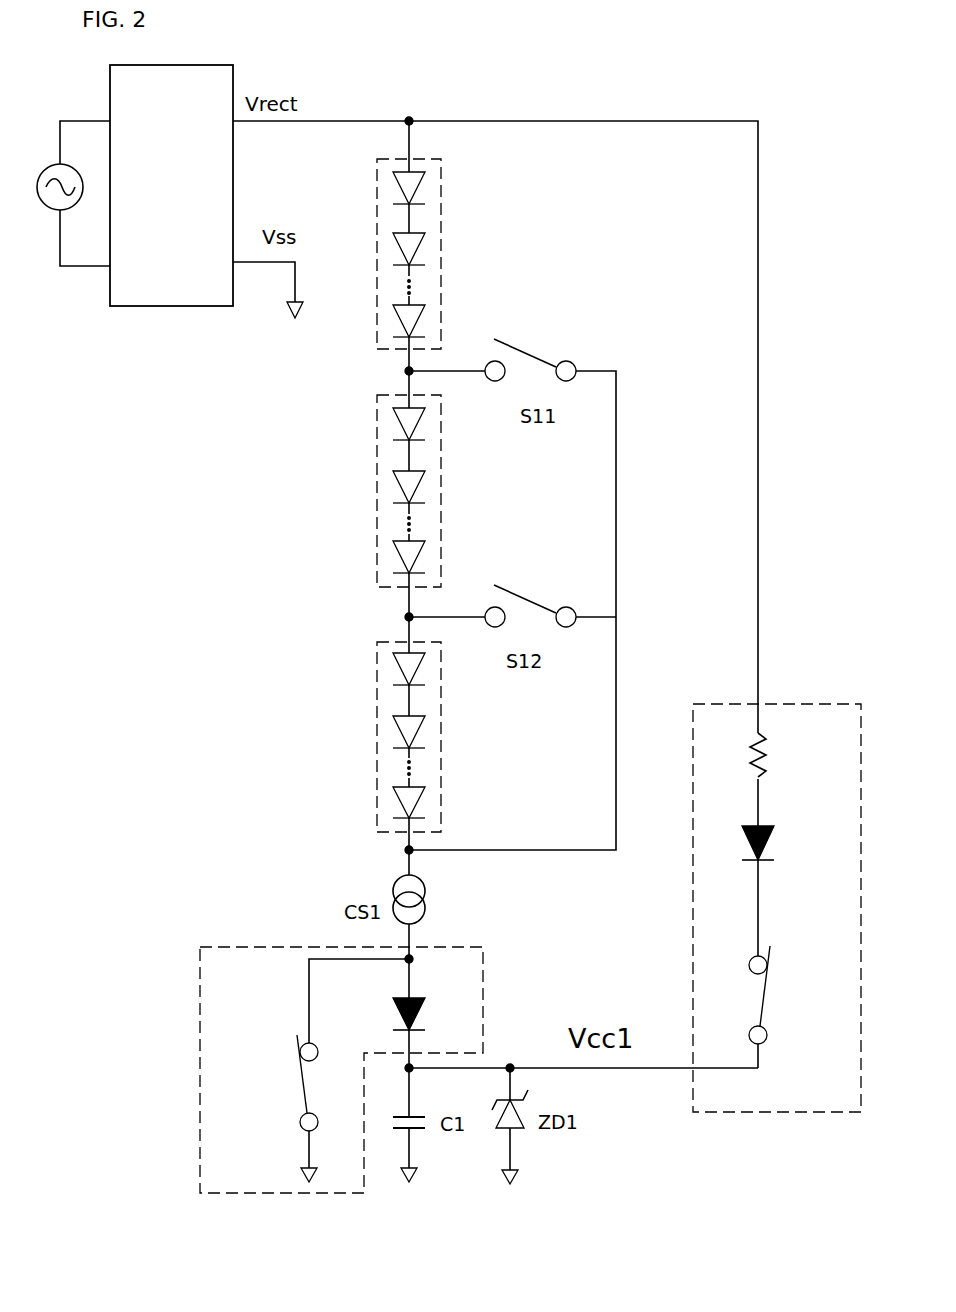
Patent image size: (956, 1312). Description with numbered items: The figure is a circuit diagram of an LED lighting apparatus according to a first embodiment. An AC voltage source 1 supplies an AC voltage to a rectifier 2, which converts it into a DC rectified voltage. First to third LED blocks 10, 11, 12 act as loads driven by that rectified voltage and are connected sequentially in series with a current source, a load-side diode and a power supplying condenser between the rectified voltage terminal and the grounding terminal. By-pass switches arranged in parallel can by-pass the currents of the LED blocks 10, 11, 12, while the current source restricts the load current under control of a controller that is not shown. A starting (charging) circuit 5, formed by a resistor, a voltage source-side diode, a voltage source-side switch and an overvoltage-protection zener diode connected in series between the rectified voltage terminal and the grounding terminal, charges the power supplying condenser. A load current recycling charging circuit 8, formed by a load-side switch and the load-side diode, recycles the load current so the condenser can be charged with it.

The AC voltage source 1 is at (46, 160).
The rectifier 2 is at (179, 322).
The starting (charging) circuit 5 is at (784, 689).
The load current recycling charging circuit 8 is at (179, 1031).
The first LED block 10 is at (461, 215).
The second LED block 11 is at (358, 508).
The third LED block 12 is at (358, 740).